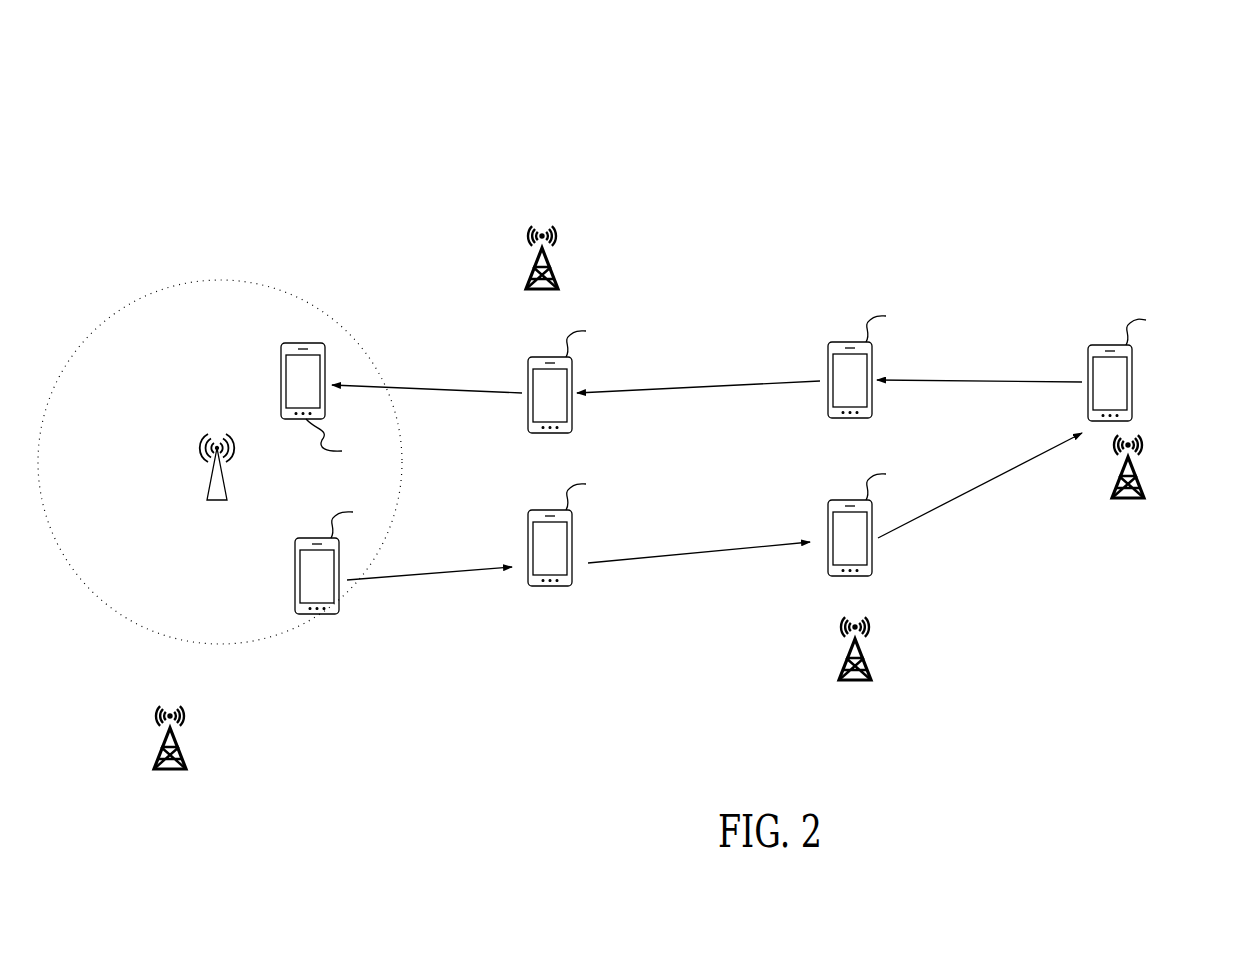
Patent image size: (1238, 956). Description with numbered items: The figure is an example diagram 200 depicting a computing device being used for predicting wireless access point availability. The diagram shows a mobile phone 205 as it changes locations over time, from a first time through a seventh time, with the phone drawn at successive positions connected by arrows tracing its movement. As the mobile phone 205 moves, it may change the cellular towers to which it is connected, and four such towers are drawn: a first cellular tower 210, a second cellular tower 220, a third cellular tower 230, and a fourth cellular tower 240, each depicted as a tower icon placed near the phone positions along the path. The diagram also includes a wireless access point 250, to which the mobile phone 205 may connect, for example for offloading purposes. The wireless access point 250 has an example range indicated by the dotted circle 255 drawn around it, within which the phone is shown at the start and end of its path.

The example diagram 200 is at (88, 66).
The mobile phone 205 is at (334, 612).
The Cell_1 210 is at (193, 699).
The Cell_2 220 is at (566, 217).
The Cell_3 230 is at (878, 611).
The Cell_4 240 is at (1153, 427).
The wireless access point AP1 250 is at (176, 460).
The dotted circle 255 is at (216, 275).